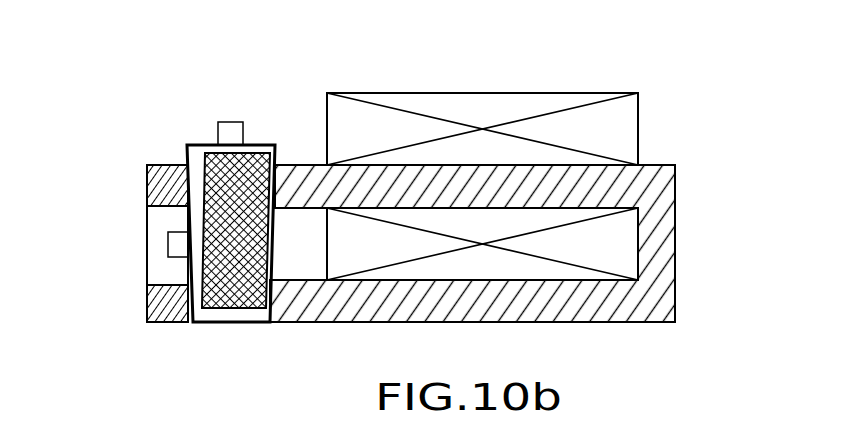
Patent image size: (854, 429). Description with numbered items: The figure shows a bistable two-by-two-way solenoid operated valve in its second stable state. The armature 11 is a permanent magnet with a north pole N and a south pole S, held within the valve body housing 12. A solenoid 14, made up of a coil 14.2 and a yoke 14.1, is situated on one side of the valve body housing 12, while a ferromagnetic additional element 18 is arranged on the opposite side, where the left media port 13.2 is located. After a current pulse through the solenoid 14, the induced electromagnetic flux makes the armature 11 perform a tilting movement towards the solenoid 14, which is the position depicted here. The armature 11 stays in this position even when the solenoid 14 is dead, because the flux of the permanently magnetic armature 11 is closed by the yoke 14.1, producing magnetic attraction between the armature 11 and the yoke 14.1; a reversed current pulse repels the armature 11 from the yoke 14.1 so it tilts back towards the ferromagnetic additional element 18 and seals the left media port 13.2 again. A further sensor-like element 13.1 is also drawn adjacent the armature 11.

The armature 11 is at (250, 158).
The valve body housing 12 is at (187, 145).
The first sensor 13.1 is at (230, 130).
The left media port 13.2 is at (172, 243).
The solenoid 14 is at (543, 179).
The yoke 14.1 is at (657, 211).
The coil 14.2 is at (630, 123).
The ferromagnetic additional element 18 is at (153, 182).